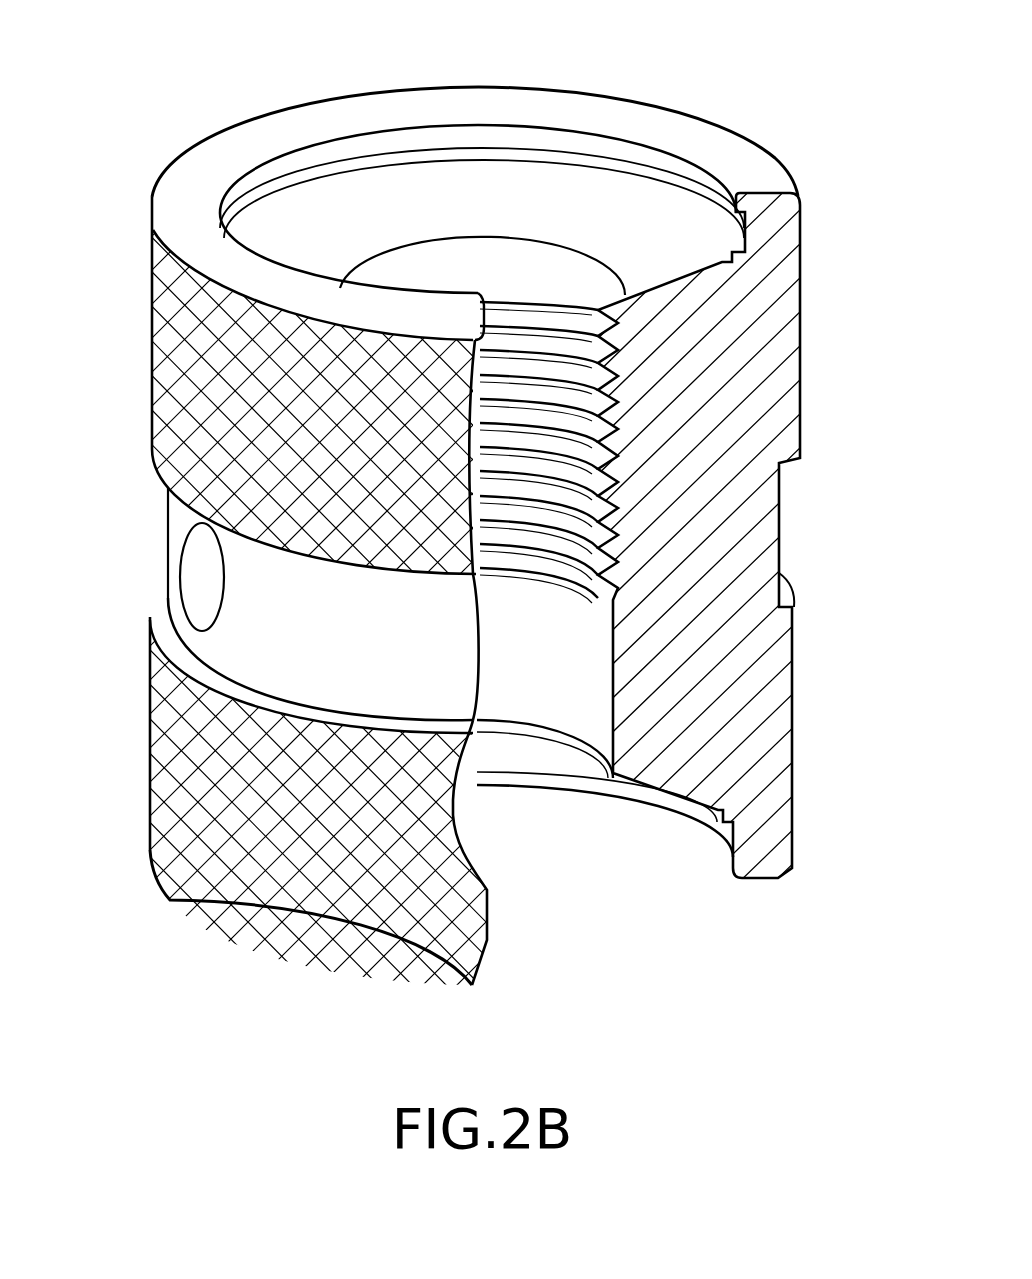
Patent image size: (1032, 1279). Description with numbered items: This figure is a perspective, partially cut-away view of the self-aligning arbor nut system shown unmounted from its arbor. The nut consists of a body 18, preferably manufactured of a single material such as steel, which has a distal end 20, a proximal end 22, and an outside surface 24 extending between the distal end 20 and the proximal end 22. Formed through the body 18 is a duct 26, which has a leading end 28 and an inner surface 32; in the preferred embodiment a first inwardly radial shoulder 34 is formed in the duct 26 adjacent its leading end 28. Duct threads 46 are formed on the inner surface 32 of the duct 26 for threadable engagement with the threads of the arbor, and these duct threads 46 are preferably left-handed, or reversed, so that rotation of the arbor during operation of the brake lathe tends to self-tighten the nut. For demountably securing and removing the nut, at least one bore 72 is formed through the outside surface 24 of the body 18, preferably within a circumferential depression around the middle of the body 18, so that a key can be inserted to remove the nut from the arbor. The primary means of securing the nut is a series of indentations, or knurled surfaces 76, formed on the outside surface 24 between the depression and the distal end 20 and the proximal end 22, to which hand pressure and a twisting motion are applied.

The body 18 is at (152, 326).
The distal end 20 is at (293, 962).
The proximal end 22 is at (750, 150).
The outside surface 24 is at (160, 750).
The duct 26 is at (393, 262).
The leading end 28 is at (730, 872).
The inner surface 32 is at (608, 735).
The first inwardly radial shoulder 34 is at (600, 212).
The duct threads 46 is at (547, 550).
The bore 72 is at (180, 549).
The knurled surfaces 76 is at (197, 890).